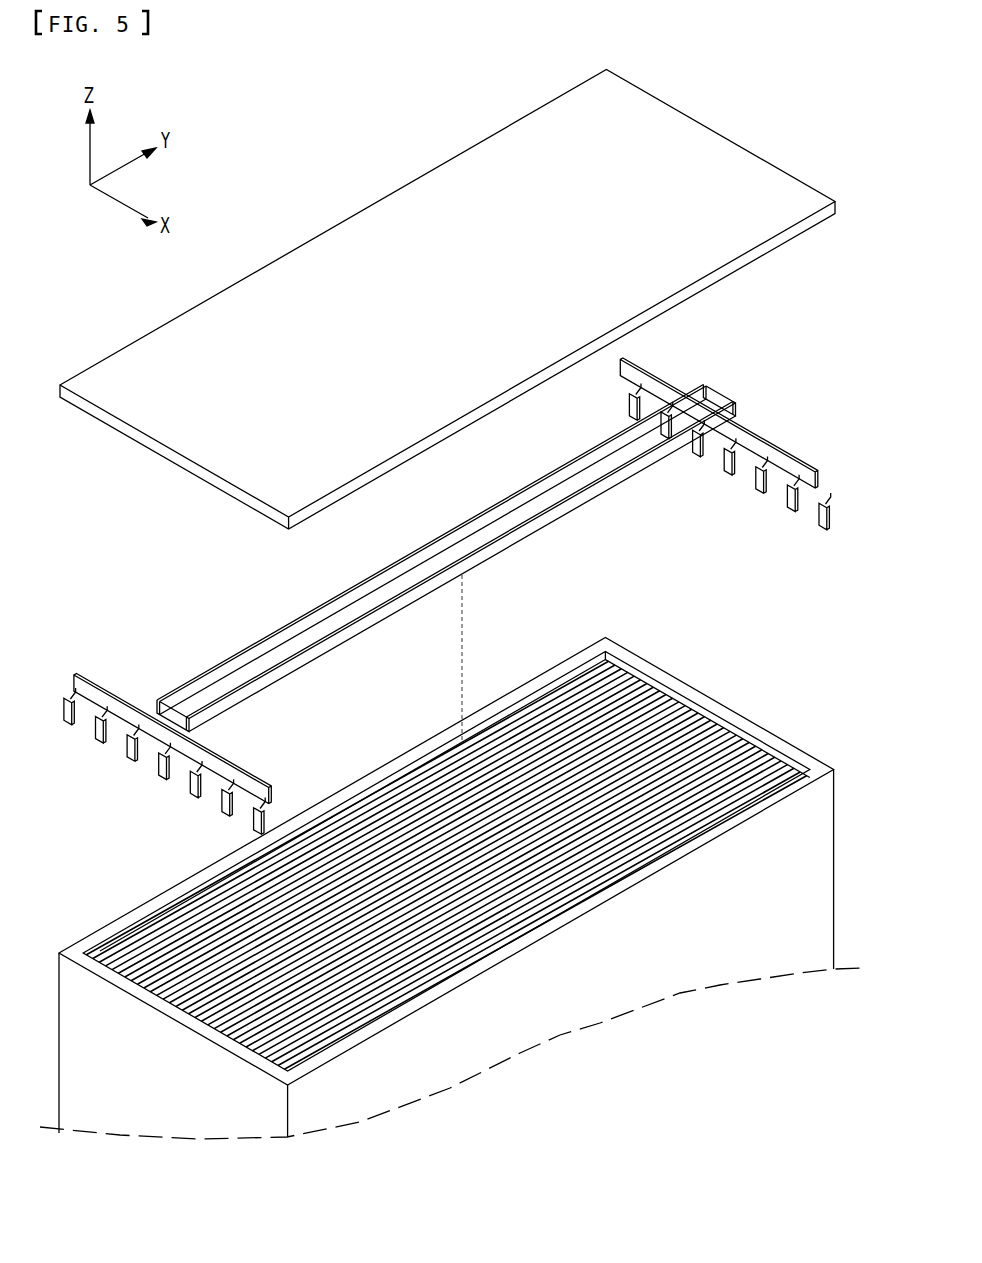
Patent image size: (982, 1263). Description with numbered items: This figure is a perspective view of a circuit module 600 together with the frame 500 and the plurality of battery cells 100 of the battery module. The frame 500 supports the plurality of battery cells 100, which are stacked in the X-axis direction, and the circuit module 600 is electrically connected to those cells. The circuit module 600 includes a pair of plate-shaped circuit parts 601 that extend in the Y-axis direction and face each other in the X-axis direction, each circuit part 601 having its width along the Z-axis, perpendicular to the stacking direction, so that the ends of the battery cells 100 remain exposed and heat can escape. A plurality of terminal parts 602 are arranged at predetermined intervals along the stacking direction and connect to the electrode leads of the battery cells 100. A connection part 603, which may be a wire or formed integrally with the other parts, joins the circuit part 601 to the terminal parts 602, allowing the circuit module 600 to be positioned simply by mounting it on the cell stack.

The battery cells 100 is at (757, 793).
The frame 500 is at (197, 437).
The circuit module 600 is at (173, 638).
The circuit part 601 is at (530, 495).
The terminal part 602 is at (793, 477).
The connection part 603 is at (645, 375).